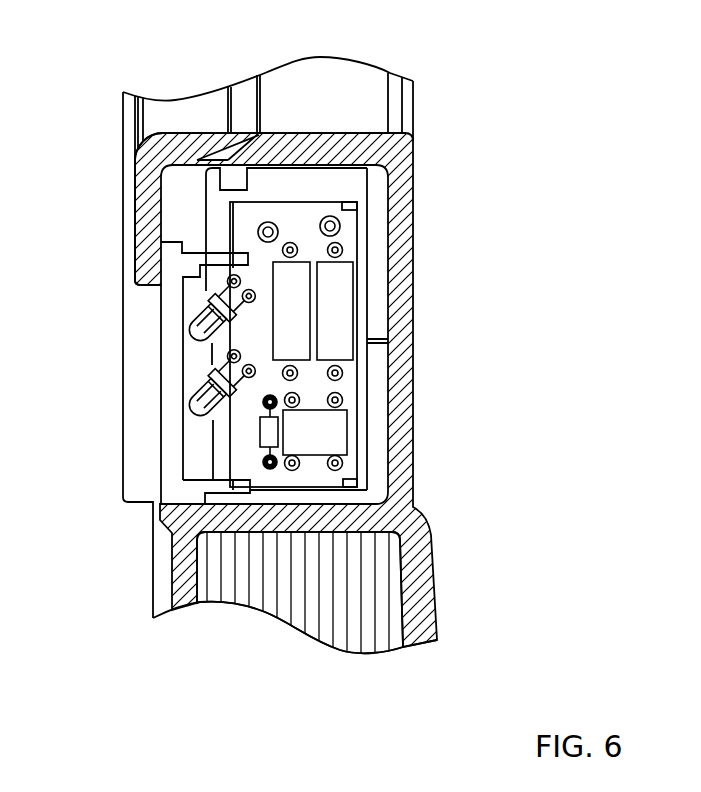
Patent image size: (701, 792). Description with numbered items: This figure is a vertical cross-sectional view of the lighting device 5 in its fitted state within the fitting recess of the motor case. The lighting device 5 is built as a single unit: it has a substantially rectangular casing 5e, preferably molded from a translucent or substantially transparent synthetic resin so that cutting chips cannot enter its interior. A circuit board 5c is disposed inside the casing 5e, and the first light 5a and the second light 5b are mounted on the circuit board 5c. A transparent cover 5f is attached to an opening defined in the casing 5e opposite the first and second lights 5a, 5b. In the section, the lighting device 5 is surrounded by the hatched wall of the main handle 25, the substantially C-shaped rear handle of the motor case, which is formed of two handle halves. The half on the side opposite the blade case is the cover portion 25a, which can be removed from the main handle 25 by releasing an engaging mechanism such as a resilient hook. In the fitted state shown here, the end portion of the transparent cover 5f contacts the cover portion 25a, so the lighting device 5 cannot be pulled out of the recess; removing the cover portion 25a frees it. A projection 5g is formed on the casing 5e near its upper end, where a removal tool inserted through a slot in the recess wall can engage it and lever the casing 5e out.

The lighting device 5 is at (138, 305).
The first light 5a is at (190, 400).
The second light 5b is at (190, 324).
The circuit board 5c is at (223, 445).
The casing 5e is at (362, 390).
The transparent cover 5f is at (170, 372).
The projection 5g is at (198, 158).
The main handle 25 is at (407, 153).
The cover portion 25a is at (143, 183).